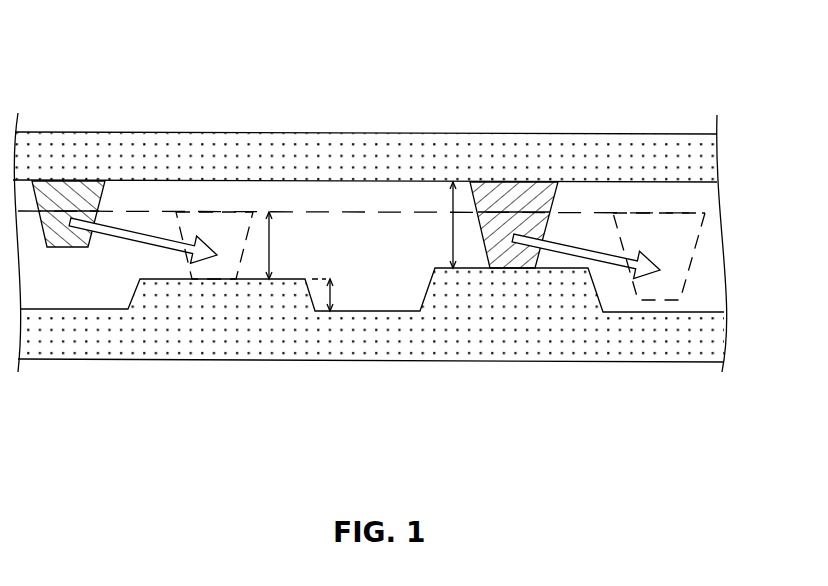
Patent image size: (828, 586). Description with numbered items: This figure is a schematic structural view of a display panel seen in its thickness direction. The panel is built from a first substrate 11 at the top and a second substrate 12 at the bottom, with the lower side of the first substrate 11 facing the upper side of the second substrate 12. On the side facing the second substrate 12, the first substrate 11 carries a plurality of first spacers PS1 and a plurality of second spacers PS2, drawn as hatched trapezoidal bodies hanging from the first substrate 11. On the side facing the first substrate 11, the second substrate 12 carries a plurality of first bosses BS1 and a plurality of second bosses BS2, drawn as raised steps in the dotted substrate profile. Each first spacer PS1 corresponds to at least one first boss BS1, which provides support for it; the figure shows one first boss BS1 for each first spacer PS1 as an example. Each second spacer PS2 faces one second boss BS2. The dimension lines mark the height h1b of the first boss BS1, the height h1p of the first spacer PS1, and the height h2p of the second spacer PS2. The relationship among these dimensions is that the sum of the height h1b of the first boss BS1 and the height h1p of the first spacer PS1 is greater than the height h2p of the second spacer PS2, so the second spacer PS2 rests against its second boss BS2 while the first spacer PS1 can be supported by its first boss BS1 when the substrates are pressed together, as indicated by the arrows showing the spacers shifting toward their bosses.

The first substrate 11 is at (343, 106).
The second substrate 12 is at (377, 389).
The first spacer PS1 is at (71, 191).
The second spacer PS2 is at (511, 190).
The first boss BS1 is at (223, 293).
The second boss BS2 is at (515, 295).
The height of the first spacer h1p is at (291, 245).
The height of the second spacer h2p is at (431, 225).
The height of the first boss h1b is at (345, 295).